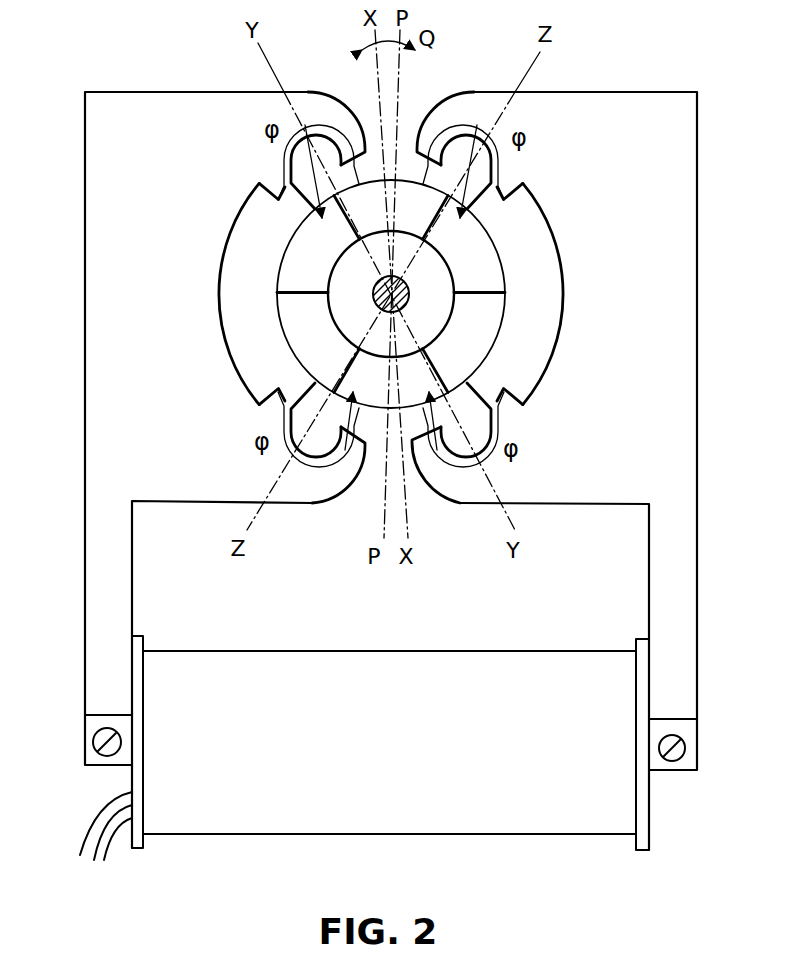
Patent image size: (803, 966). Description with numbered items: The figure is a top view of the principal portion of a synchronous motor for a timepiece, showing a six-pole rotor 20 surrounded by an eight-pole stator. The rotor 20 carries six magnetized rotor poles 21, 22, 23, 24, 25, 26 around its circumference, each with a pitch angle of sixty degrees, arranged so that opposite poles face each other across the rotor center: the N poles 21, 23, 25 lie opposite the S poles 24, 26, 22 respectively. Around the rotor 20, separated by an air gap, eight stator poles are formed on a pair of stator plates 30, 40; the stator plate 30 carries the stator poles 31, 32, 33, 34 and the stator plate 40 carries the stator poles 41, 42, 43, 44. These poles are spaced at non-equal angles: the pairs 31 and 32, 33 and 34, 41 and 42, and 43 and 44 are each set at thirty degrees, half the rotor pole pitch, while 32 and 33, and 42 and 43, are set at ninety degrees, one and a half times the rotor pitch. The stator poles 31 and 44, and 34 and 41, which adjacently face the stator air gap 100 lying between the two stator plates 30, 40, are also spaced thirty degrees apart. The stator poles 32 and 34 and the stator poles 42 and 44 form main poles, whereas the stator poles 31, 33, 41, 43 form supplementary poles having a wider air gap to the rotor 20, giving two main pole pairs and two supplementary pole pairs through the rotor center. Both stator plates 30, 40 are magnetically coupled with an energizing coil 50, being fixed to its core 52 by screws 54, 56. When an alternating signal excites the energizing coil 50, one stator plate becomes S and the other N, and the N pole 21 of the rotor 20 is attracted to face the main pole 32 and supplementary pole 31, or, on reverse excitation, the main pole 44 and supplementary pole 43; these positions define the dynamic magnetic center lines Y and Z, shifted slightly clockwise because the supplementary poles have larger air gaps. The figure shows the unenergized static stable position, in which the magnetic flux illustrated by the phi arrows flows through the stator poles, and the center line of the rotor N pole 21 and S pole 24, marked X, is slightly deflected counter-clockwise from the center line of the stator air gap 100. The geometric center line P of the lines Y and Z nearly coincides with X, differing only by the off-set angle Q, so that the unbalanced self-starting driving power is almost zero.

The rotor 20 is at (478, 313).
The rotor pole 21 is at (396, 205).
The rotor pole 22 is at (484, 254).
The rotor pole 23 is at (478, 352).
The rotor pole 24 is at (371, 392).
The rotor pole 25 is at (295, 331).
The rotor pole 26 is at (294, 264).
The stator plate 30 is at (684, 176).
The stator pole 31 is at (442, 120).
The stator pole 32 is at (504, 190).
The stator pole 33 is at (508, 410).
The stator pole 34 is at (432, 460).
The stator plate 40 is at (100, 174).
The stator pole 41 is at (346, 466).
The stator pole 42 is at (278, 400).
The stator pole 43 is at (277, 186).
The stator pole 44 is at (347, 132).
The energizing coil 50 is at (288, 826).
The core 52 is at (655, 768).
The screw 54 is at (686, 749).
The screw 56 is at (95, 735).
The stator air gap 100 is at (407, 122).